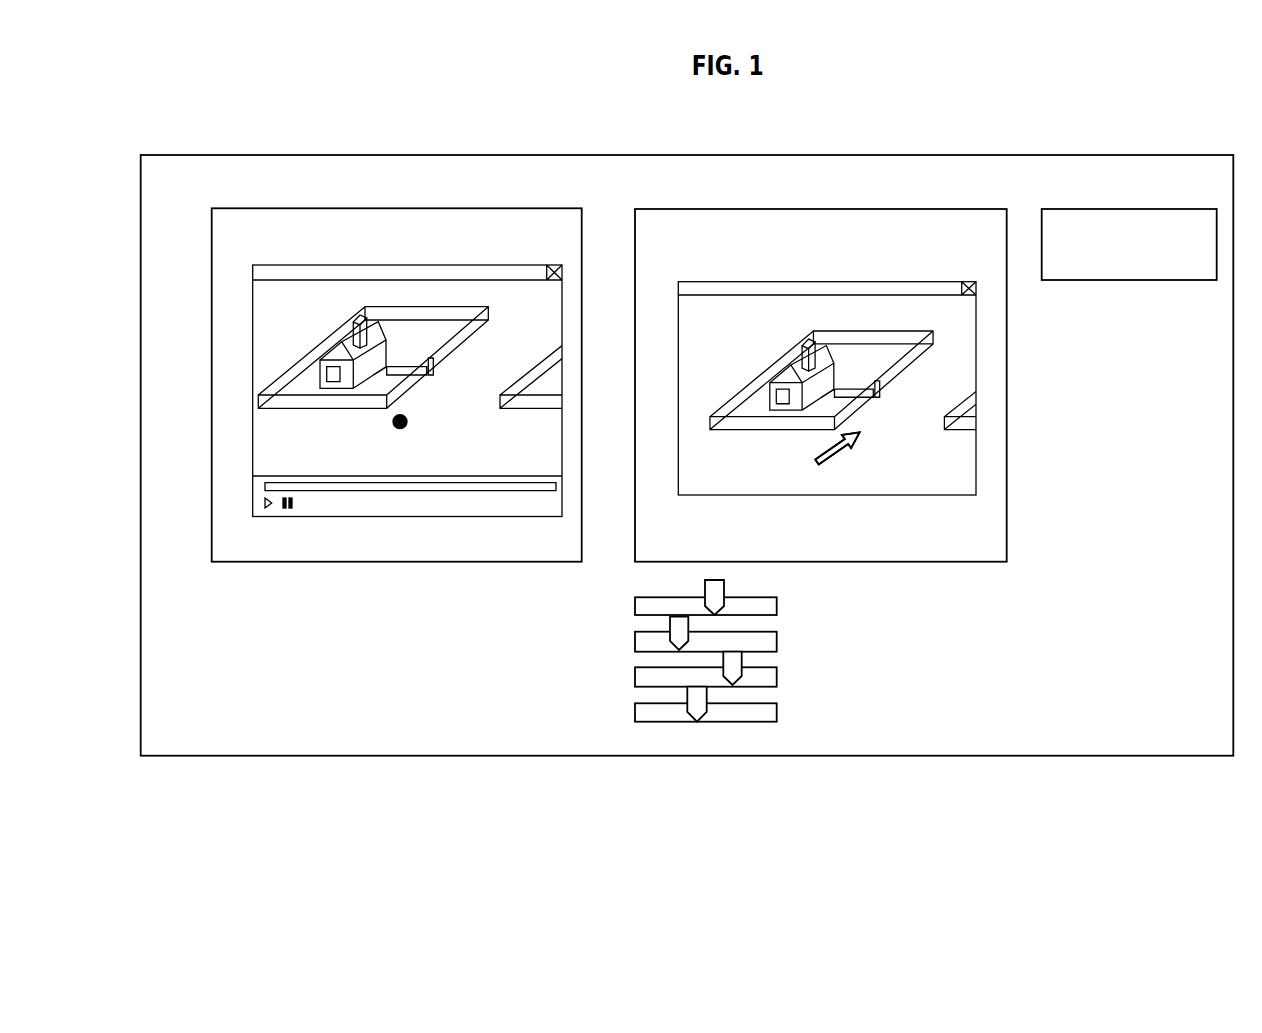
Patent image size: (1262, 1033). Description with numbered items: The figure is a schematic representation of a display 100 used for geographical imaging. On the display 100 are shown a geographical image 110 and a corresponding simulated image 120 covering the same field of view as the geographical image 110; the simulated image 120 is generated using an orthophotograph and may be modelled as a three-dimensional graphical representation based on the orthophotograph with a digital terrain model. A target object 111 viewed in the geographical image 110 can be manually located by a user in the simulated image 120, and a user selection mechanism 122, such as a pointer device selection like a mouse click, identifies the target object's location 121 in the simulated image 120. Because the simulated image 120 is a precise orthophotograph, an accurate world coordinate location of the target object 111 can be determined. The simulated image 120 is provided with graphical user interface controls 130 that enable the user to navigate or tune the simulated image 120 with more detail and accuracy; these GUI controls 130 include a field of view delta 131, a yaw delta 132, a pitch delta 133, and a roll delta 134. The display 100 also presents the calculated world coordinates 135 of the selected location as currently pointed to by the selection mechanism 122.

The display 100 is at (141, 227).
The geographical image 110 is at (388, 208).
The target object 111 is at (405, 420).
The simulated image 120 is at (687, 209).
The target object's location 121 is at (867, 437).
The user selection mechanism 122 is at (847, 456).
The graphical user interface controls 130 is at (642, 710).
The field of view delta 131 is at (635, 720).
The yaw delta 132 is at (635, 668).
The pitch delta 133 is at (635, 633).
The roll delta 134 is at (635, 600).
The calculated world coordinates 135 is at (1127, 209).